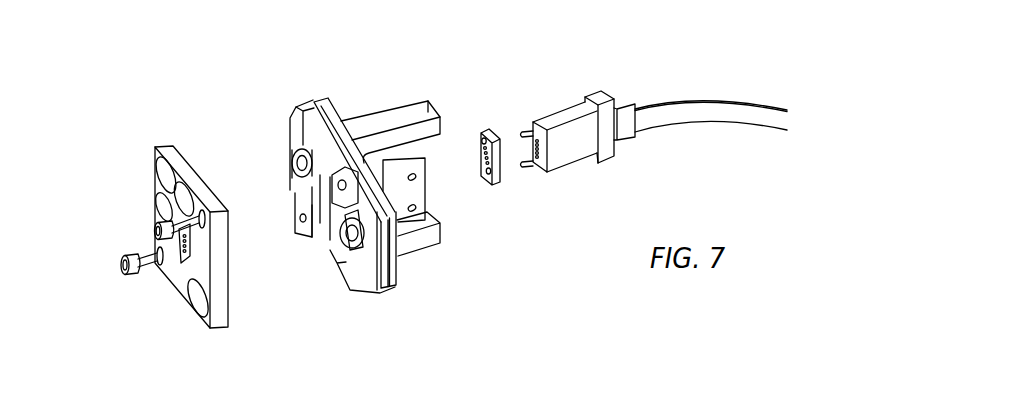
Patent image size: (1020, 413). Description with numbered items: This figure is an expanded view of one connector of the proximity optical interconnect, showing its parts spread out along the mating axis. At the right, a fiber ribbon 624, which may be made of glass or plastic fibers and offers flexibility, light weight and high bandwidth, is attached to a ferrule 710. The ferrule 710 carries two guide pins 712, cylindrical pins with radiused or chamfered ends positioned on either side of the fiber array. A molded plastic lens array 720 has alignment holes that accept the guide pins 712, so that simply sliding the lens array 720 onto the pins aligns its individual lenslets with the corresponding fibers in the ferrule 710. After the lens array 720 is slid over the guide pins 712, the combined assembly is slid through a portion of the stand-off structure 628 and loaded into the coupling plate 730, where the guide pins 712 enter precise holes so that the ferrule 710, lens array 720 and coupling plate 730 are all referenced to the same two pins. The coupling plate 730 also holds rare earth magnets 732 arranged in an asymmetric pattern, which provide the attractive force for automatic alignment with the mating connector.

The coupling plate 730 is at (168, 148).
The rare earth magnets 732 is at (168, 180).
The stand-off structure 628 is at (384, 118).
The ferrule 710 is at (556, 118).
The guide pins 712 is at (525, 132).
The lens array 720 is at (490, 190).
The fiber ribbon 624 is at (700, 103).